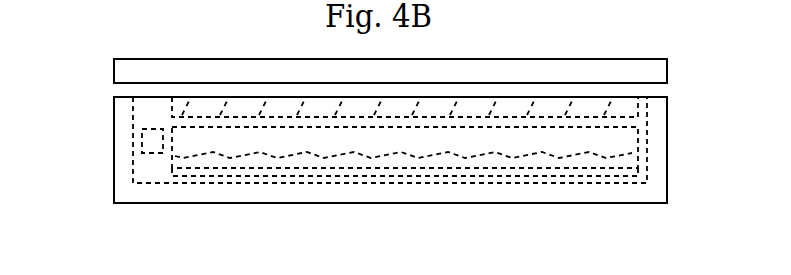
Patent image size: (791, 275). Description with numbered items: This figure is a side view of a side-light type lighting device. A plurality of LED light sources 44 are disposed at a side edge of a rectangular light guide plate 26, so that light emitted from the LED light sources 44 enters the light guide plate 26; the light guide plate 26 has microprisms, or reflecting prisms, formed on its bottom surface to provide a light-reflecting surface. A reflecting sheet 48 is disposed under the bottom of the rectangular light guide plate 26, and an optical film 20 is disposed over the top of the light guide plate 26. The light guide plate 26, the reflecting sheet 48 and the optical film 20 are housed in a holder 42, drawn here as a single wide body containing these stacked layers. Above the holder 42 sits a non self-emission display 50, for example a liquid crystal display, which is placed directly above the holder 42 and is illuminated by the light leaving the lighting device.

The non self-emission display 50 is at (657, 72).
The optical film 20 is at (618, 108).
The holder 42 is at (662, 117).
The light guide plate 26 is at (623, 142).
The reflecting sheet 48 is at (630, 173).
The LED light source 44 is at (147, 144).